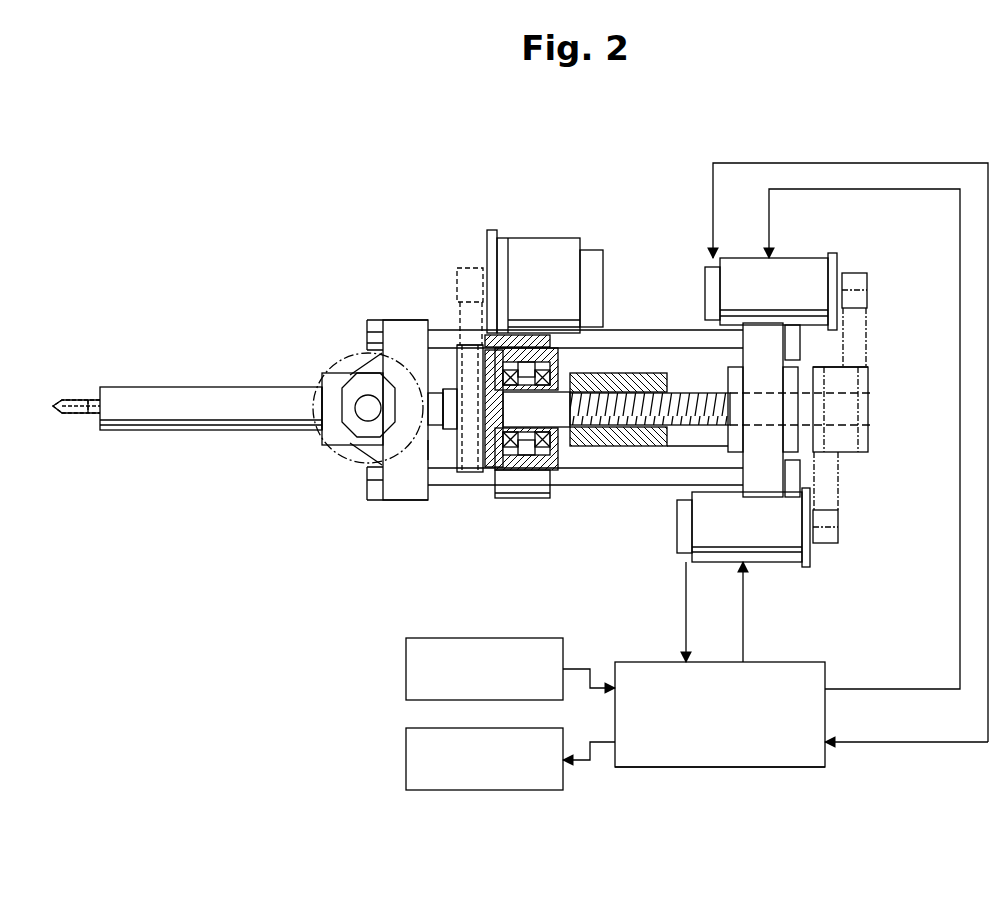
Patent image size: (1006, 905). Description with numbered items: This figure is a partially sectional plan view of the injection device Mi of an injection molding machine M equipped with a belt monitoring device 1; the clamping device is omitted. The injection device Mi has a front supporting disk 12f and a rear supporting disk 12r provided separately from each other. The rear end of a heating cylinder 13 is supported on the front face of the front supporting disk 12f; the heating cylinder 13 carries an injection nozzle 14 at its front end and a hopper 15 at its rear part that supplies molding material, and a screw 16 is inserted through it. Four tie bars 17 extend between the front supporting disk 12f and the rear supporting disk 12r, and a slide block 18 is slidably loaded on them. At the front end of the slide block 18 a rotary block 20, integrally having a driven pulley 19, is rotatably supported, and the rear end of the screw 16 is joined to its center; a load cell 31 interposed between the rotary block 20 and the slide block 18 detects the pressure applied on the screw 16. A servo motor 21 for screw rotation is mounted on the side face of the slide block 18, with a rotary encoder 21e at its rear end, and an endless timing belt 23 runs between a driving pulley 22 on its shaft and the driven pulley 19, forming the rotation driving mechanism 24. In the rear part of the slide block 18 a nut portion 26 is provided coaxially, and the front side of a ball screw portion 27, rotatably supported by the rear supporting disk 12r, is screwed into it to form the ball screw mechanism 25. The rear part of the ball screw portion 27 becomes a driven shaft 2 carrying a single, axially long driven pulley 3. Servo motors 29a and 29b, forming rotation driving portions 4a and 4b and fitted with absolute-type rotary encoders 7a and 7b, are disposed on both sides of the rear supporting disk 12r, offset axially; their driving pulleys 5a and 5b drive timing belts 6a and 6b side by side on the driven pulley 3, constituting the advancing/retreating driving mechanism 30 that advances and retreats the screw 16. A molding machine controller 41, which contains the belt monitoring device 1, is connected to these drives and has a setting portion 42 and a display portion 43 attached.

The belt monitoring device 1 is at (830, 788).
The driven shaft 2 is at (868, 383).
The driven pulley 3 is at (868, 425).
The rotation driving portion 4a is at (793, 258).
The rotation driving portion 4b is at (780, 570).
The driving pulley 5a is at (868, 285).
The driving pulley 5b is at (840, 530).
The endless timing belt 6a is at (866, 318).
The endless timing belt 6b is at (845, 490).
The rotary encoder 7a is at (710, 267).
The rotary encoder 7b is at (677, 540).
The front supporting disk 12f is at (392, 320).
The rear supporting disk 12r is at (750, 497).
The heating cylinder 13 is at (208, 387).
The injection nozzle 14 is at (82, 400).
The hopper 15 is at (335, 362).
The screw 16 is at (430, 328).
The tie bars 17 is at (688, 330).
The slide block 18 is at (563, 470).
The driven pulley 19 is at (427, 450).
The rotary block 20 is at (520, 405).
The servo motor for screw rotation 21 is at (545, 238).
The rotary encoder 21e is at (592, 250).
The driving pulley 22 is at (458, 268).
The endless timing belt 23 is at (452, 325).
The rotation driving mechanism 24 is at (470, 200).
The ball screw mechanism 25 is at (642, 372).
The nut portion 26 is at (607, 447).
The ball screw portion 27 is at (687, 430).
The servo motor for advancing/retreating screw 29a is at (838, 258).
The servo motor for advancing/retreating screw 29b is at (811, 560).
The advancing/retreating driving mechanism 30 is at (860, 615).
The load cell 31 is at (530, 345).
The molding machine controller 41 is at (640, 662).
The setting portion 42 is at (406, 672).
The display portion 43 is at (406, 758).
The injection molding machine M is at (292, 198).
The injection device Mi is at (280, 505).